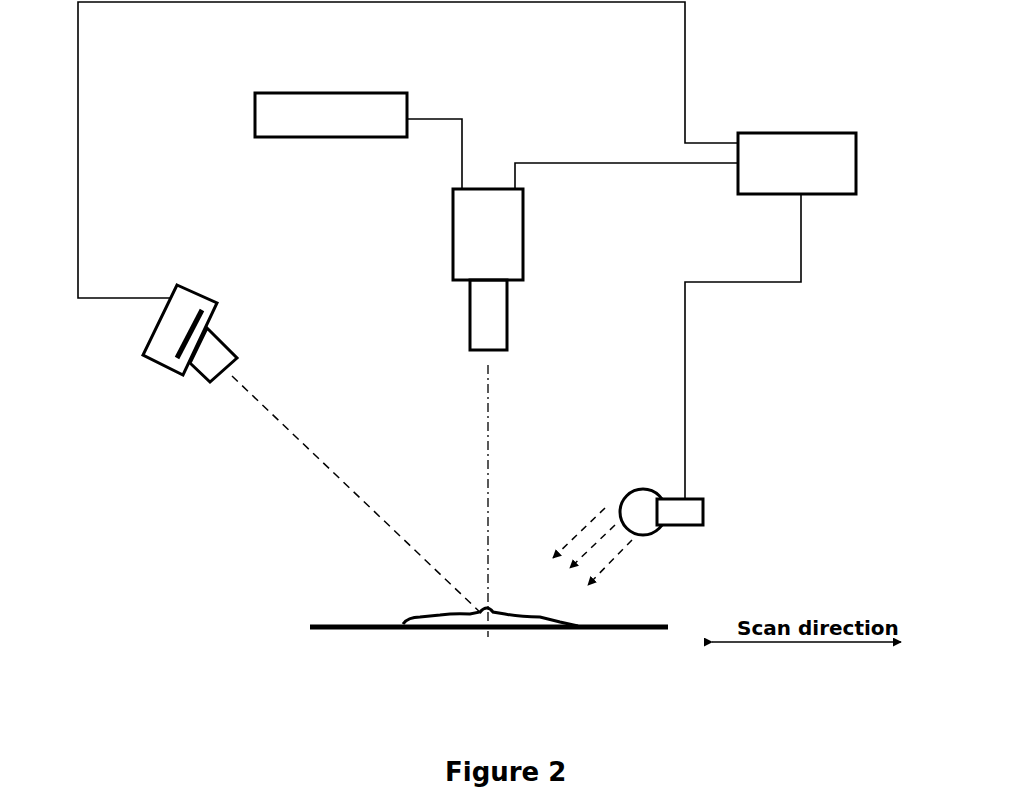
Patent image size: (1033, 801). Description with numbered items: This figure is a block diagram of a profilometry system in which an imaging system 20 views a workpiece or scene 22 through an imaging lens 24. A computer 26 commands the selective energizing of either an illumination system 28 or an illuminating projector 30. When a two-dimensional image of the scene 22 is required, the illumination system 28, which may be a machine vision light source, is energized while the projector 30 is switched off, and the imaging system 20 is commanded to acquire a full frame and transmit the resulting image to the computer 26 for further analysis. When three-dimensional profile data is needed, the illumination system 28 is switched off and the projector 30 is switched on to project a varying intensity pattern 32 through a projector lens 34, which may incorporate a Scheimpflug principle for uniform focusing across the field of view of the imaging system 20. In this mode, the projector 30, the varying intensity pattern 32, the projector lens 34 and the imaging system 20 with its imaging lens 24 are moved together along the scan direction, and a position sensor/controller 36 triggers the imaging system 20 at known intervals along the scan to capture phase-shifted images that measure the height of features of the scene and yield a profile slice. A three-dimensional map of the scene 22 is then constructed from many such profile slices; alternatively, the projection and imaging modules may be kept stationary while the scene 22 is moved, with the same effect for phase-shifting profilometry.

The imaging system 20 is at (488, 186).
The workpiece or scene 22 is at (395, 618).
The imaging lens 24 is at (464, 325).
The computer 26 is at (766, 130).
The illumination system 28 is at (722, 517).
The illuminating projector 30 is at (148, 330).
The varying intensity pattern 32 is at (175, 345).
The projector lens 34 is at (220, 388).
The position sensor/controller 36 is at (247, 95).